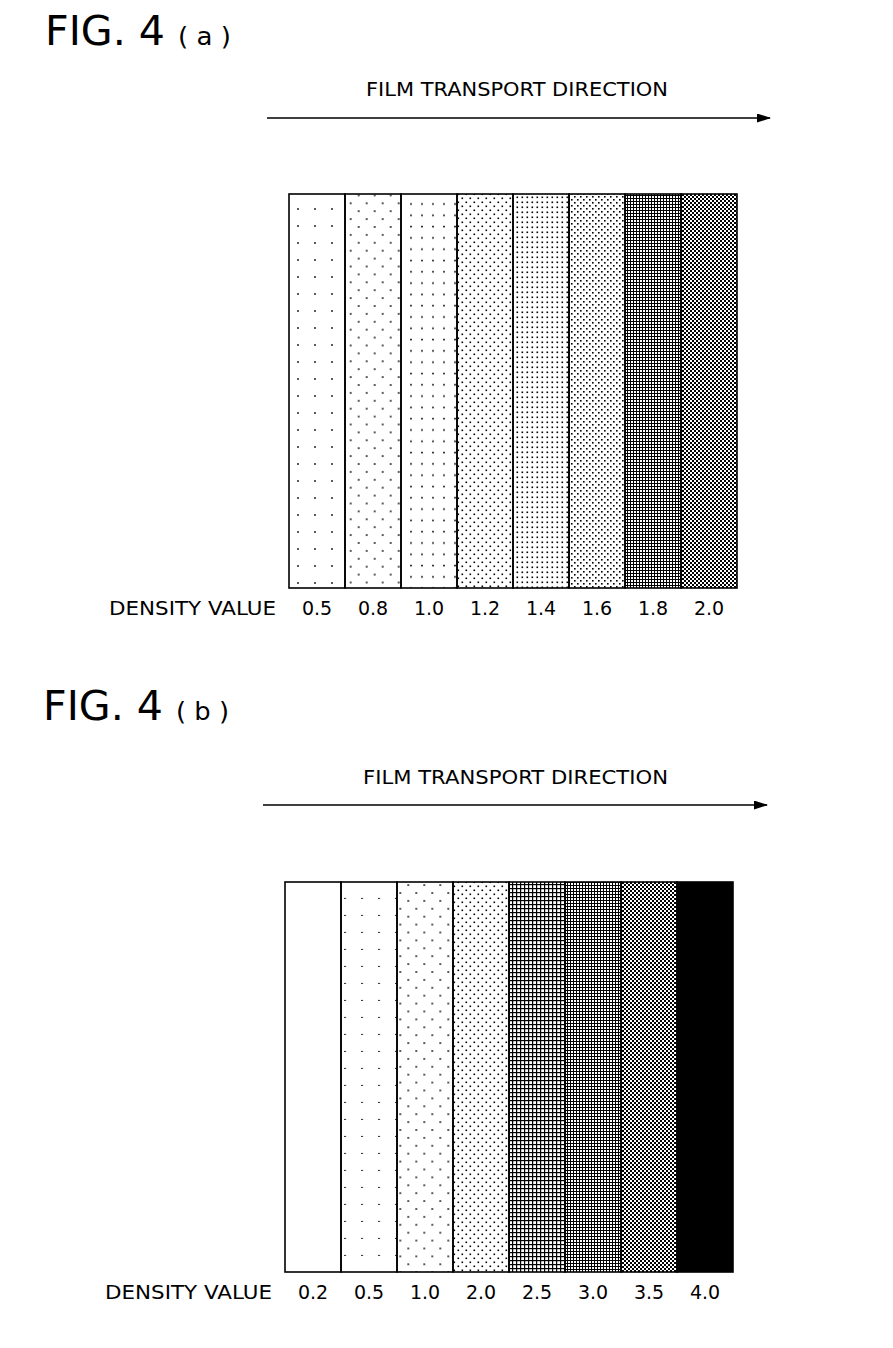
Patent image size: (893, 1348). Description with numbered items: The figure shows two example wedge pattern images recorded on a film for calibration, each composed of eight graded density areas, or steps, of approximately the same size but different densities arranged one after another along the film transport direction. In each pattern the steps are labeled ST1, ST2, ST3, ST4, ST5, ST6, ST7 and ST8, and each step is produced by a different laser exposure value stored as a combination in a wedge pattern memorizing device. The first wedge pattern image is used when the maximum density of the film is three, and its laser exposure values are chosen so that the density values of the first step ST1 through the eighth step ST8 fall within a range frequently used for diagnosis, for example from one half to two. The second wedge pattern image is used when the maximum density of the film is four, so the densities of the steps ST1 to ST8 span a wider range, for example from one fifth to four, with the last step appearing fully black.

In FIG. 4A, the first step ST1 is at (317, 375).
In FIG. 4B, the first step ST1 is at (313, 1060).
In FIG. 4A, the second step ST2 is at (373, 375).
In FIG. 4B, the second step ST2 is at (369, 1060).
In FIG. 4A, the third step ST3 is at (429, 375).
In FIG. 4B, the third step ST3 is at (425, 1060).
In FIG. 4A, the fourth step ST4 is at (485, 375).
In FIG. 4B, the fourth step ST4 is at (481, 1060).
In FIG. 4A, the fifth step ST5 is at (541, 375).
In FIG. 4B, the fifth step ST5 is at (537, 1060).
In FIG. 4A, the sixth step ST6 is at (597, 375).
In FIG. 4B, the sixth step ST6 is at (593, 1060).
In FIG. 4A, the seventh step ST7 is at (653, 375).
In FIG. 4B, the seventh step ST7 is at (649, 1060).
In FIG. 4A, the eighth step ST8 is at (709, 375).
In FIG. 4B, the eighth step ST8 is at (705, 1060).